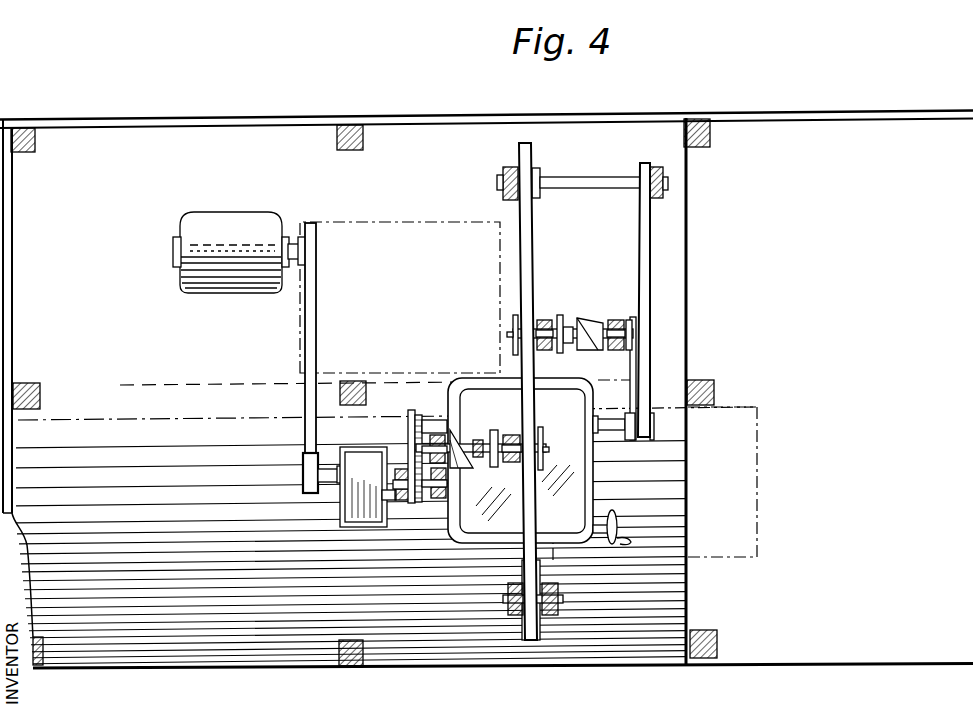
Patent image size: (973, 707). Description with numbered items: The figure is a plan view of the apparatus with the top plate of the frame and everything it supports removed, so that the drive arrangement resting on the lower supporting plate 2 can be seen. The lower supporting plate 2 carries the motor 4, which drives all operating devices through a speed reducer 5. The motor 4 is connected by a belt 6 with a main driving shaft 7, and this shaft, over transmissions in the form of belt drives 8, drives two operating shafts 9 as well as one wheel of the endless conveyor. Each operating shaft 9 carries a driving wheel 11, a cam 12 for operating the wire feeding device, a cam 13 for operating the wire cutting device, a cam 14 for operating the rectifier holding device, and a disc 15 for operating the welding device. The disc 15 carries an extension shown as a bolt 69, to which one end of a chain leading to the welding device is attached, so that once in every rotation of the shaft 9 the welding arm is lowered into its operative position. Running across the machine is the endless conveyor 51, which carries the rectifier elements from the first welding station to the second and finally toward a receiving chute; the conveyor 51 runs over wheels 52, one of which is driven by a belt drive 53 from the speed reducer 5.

The lower supporting plate 2 is at (677, 213).
The motor 4 is at (229, 222).
The speed reducer 5 is at (483, 378).
The belt 6 is at (316, 333).
The main driving shaft 7 is at (332, 467).
The belt drives 8 is at (408, 432).
The operating shafts 9 is at (575, 328).
The driving wheel 11 is at (622, 322).
The cam 12 is at (592, 320).
The cam 13 is at (562, 342).
The cam 14 is at (528, 323).
The disc 15 is at (513, 325).
The bolt 69 is at (507, 335).
The endless conveyor 51 is at (530, 275).
The wheels 52 is at (531, 154).
The belt drive 53 is at (645, 278).